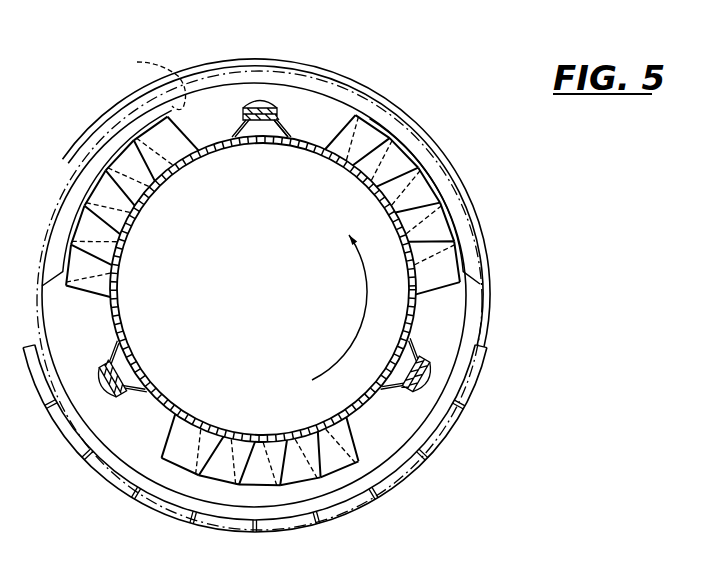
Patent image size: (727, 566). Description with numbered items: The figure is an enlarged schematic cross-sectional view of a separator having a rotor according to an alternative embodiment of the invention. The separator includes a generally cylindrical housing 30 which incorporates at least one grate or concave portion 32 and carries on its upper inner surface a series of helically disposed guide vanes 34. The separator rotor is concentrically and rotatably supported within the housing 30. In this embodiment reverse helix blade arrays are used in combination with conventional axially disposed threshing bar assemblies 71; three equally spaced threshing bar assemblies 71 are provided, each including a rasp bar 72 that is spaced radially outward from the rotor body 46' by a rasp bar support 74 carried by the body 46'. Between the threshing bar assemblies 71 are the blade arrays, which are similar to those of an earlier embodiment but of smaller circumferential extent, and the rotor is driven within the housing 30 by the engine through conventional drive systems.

The housing 30 is at (433, 127).
The grate or concave portion 32 is at (412, 485).
The guide vanes 34 is at (259, 290).
The rotor body 46' is at (263, 289).
The threshing bar assembly 71 is at (264, 211).
The rasp bar 72 is at (272, 108).
The rasp bar support 74 is at (281, 127).